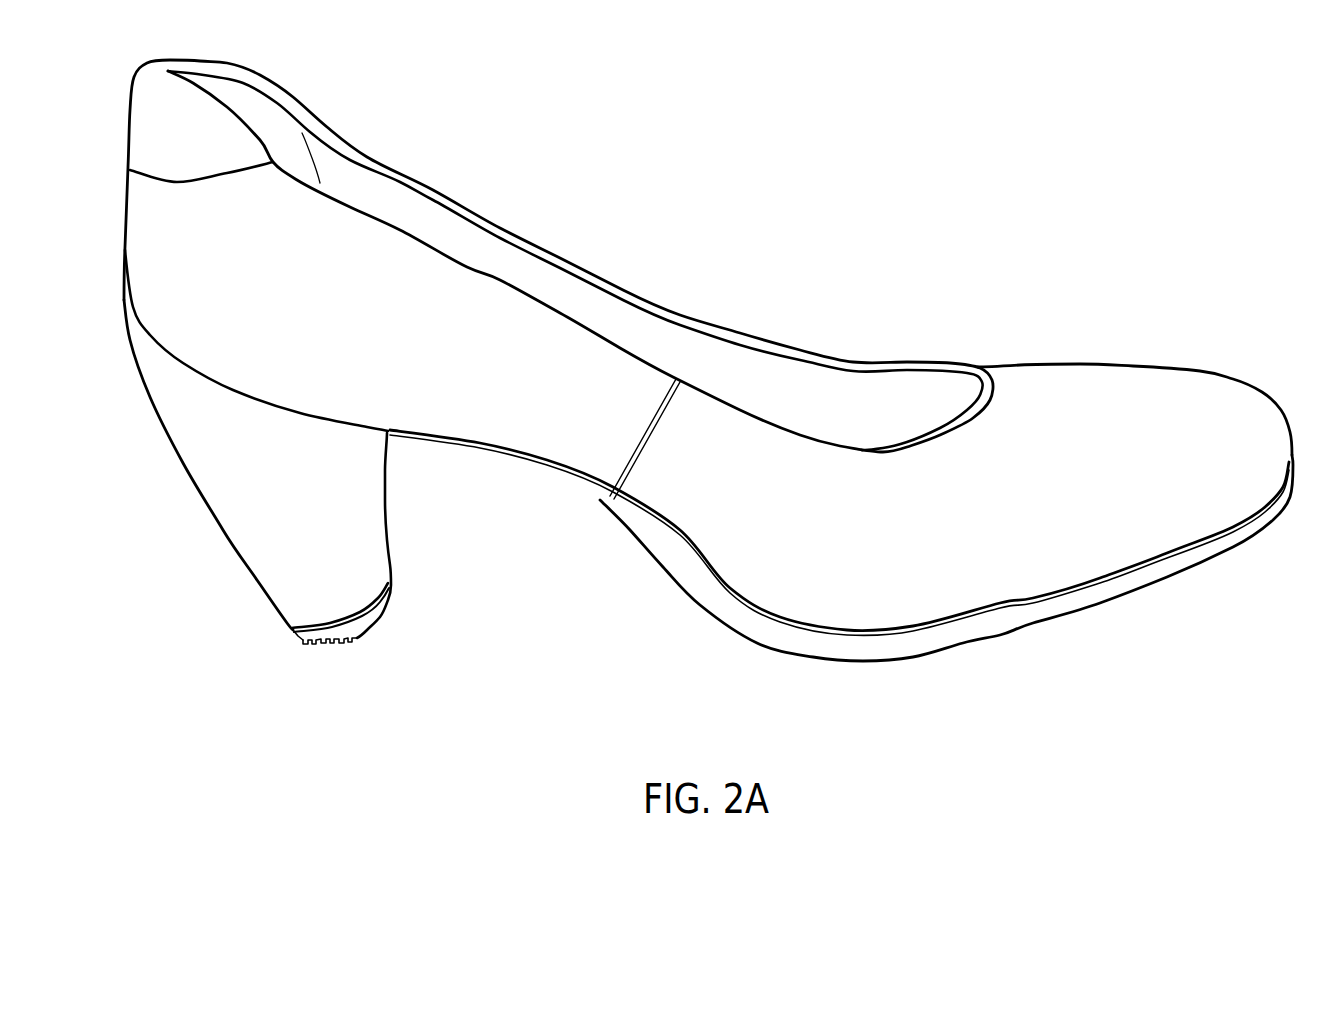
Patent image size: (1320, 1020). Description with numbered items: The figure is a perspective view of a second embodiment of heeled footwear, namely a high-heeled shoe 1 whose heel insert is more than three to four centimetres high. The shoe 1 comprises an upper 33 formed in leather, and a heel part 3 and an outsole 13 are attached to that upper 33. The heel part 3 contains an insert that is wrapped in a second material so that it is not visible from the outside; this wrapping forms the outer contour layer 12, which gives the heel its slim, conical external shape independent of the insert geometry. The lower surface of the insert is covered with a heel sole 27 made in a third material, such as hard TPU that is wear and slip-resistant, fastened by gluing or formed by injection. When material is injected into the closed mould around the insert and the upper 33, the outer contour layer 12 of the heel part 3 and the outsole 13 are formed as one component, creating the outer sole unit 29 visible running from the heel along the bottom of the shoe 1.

The high-heeled shoe 1 is at (886, 158).
The heel part 3 is at (228, 530).
The outer contour layer 12 is at (333, 565).
The outsole 13 is at (960, 635).
The heel sole 27 is at (293, 630).
The outer sole unit 29 is at (610, 502).
The upper 33 is at (425, 267).